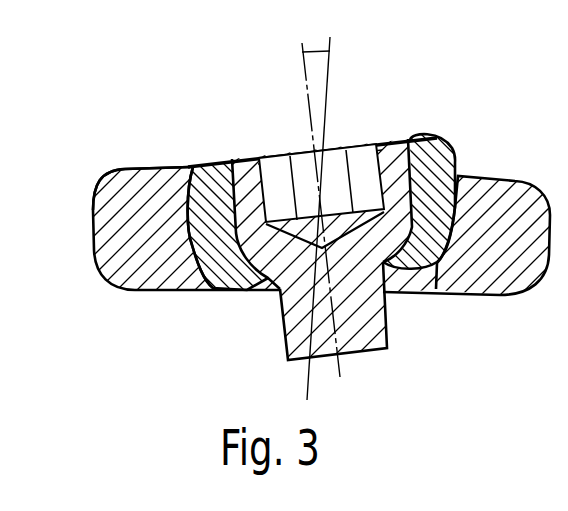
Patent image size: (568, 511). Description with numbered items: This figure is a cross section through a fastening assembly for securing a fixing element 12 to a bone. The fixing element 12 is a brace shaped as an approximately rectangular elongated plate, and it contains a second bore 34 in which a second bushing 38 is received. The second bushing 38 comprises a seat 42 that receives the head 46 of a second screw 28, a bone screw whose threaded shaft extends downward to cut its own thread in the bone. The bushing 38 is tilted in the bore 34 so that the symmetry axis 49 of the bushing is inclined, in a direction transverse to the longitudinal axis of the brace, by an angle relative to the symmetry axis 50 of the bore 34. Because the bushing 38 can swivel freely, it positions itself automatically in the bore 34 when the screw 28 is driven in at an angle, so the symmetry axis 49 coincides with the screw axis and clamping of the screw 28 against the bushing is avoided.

The fixing element 12 is at (100, 268).
The second screw 28 is at (283, 312).
The second bore 34 is at (187, 167).
The second bushing 38 is at (198, 167).
The seat 42 is at (240, 161).
The head 46 is at (432, 150).
The symmetry axis 49 is at (305, 82).
The symmetry axis 50 is at (328, 107).